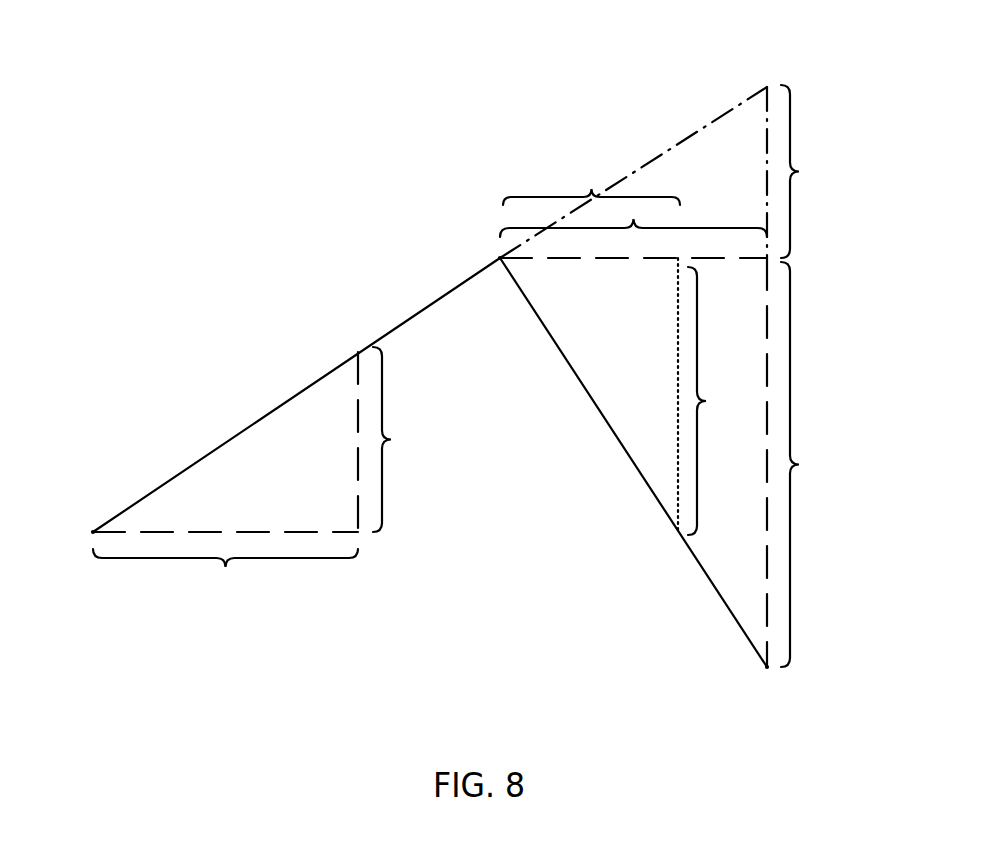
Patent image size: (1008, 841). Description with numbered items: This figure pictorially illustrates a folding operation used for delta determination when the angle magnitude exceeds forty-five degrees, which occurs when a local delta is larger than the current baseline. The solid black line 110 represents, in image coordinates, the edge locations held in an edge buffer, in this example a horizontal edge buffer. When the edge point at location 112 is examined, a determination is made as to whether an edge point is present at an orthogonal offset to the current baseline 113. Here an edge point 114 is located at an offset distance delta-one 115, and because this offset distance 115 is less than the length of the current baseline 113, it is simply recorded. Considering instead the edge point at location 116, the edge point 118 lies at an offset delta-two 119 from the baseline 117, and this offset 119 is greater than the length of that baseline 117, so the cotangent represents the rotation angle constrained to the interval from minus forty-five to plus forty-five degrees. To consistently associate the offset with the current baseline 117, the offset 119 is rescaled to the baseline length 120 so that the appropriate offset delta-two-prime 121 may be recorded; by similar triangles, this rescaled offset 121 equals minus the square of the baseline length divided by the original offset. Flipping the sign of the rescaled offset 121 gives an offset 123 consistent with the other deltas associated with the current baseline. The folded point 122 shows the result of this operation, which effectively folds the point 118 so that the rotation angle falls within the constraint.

The solid black line 110 is at (419, 306).
The edge point location 112 is at (86, 522).
The current baseline 113 is at (124, 566).
The edge point 114 is at (351, 343).
The offset distance Δ1 115 is at (386, 389).
The edge point location 116 is at (495, 252).
The baseline 117 is at (680, 218).
The edge point 118 is at (760, 674).
The offset Δ2 119 is at (795, 345).
The baseline length 120 is at (698, 466).
The offset Δ2' 121 is at (528, 164).
The alternative third camera position 122 is at (762, 78).
The offset 123 is at (796, 126).